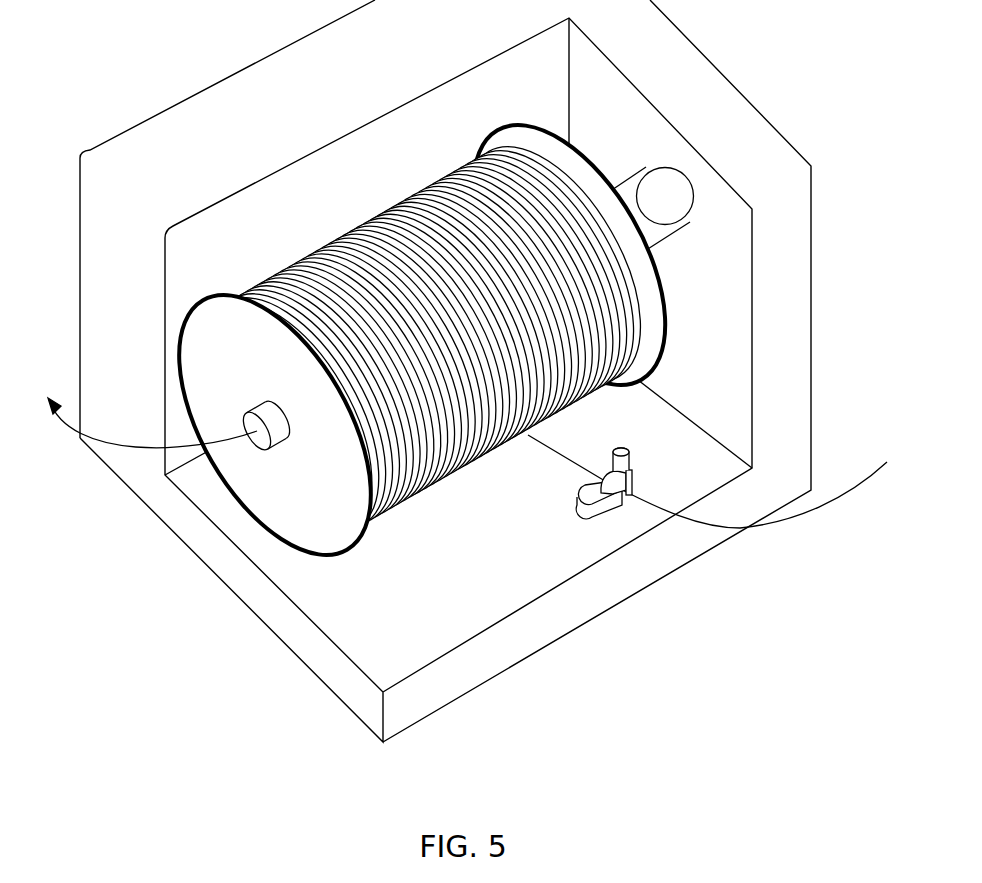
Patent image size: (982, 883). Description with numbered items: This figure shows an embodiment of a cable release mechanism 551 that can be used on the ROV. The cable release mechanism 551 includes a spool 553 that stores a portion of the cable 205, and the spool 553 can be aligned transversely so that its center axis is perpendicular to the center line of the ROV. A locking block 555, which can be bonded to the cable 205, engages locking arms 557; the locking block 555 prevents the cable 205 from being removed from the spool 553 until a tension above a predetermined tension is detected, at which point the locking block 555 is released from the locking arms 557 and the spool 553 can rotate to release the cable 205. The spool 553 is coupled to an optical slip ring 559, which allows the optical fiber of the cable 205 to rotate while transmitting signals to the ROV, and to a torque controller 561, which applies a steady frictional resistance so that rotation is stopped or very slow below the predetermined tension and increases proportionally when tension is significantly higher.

The cable release mechanism 551 is at (770, 70).
The spool 553 is at (213, 293).
The locking block 555 is at (632, 467).
The locking arms 557 is at (588, 508).
The optical slip ring 559 is at (276, 405).
The torque controller 561 is at (668, 197).
The cable 205 is at (438, 488).